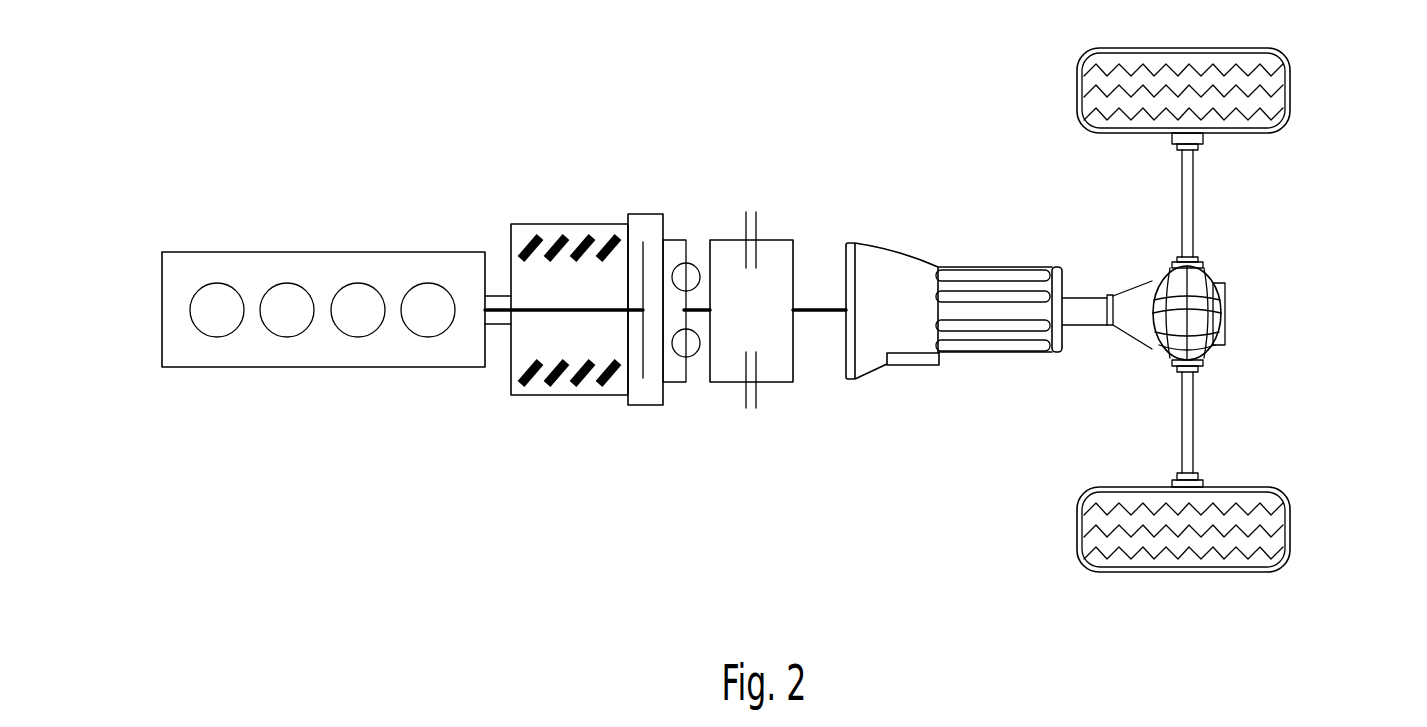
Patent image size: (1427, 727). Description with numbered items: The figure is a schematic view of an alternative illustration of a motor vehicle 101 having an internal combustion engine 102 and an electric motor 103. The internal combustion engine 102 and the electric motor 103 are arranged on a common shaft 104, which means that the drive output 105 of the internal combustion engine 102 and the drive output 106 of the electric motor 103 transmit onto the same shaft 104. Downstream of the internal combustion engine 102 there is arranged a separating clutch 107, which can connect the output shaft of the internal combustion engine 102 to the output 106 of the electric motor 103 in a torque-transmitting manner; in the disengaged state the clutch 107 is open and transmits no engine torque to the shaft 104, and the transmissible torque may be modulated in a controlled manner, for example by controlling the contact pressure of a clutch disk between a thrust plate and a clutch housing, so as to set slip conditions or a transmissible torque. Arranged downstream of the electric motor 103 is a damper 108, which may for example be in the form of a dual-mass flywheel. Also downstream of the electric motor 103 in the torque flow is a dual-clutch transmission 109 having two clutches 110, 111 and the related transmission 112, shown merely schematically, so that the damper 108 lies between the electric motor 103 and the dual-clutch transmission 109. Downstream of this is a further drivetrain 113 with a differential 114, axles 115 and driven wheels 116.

The motor vehicle 101 is at (914, 61).
The internal combustion engine 102 is at (402, 269).
The electric motor 103 is at (557, 233).
The common shaft 104 is at (702, 310).
The drive output 105 is at (504, 317).
The drive output 106 is at (645, 226).
The separating clutch 107 is at (645, 398).
The damper 108 is at (693, 272).
The dual-clutch transmission 109 is at (826, 396).
The clutch 110 is at (750, 240).
The clutch 111 is at (750, 393).
The transmission 112 is at (917, 297).
The further drivetrain 113 is at (1262, 226).
The differential 114 is at (1187, 315).
The axles 115 is at (1190, 183).
The driven wheels 116 is at (1233, 77).